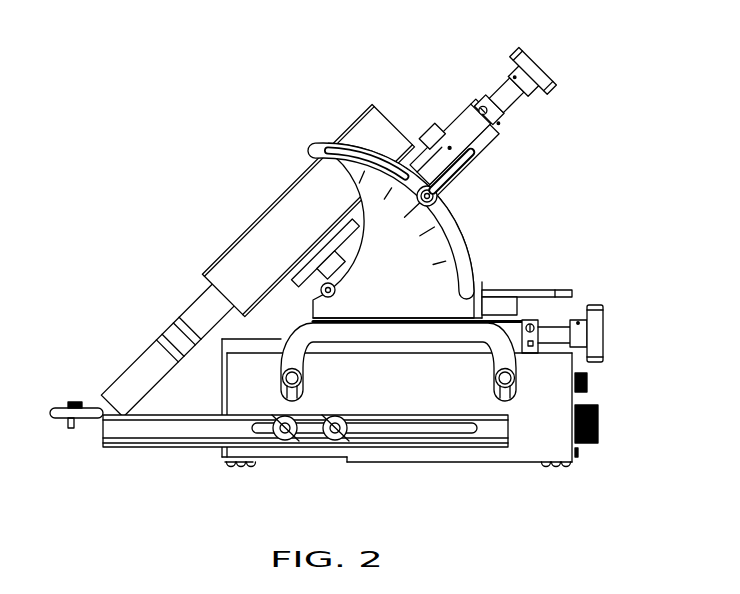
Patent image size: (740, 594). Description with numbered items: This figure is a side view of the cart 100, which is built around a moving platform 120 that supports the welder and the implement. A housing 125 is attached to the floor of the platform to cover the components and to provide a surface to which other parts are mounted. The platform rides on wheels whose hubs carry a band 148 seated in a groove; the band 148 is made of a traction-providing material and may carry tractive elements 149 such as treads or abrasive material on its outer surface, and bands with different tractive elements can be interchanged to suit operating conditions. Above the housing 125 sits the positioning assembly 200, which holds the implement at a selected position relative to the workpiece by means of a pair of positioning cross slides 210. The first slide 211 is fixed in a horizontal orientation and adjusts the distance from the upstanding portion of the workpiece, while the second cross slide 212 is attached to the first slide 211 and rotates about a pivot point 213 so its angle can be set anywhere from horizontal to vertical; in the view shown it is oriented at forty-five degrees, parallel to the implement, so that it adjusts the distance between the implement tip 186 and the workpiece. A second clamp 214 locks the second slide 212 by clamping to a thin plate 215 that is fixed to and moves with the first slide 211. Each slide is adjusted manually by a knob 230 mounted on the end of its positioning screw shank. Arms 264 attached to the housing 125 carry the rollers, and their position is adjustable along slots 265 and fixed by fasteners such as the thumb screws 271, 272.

The cart 100 is at (137, 180).
The moving platform 120 is at (527, 445).
The housing 125 is at (550, 376).
The band 148 is at (232, 468).
The tractive elements 149 is at (250, 468).
The implement tip 186 is at (102, 405).
The positioning assembly 200 is at (580, 147).
The positioning cross slides 210 is at (458, 189).
The first slide 211 is at (495, 288).
The second cross slide 212 is at (431, 133).
The pivot point 213 is at (318, 288).
The second clamp 214 is at (458, 167).
The plate 215 is at (378, 228).
The knob 230 is at (536, 52).
The arms 264 is at (137, 435).
The slots 265 is at (405, 427).
The thumb screw 271 is at (277, 418).
The thumb screw 272 is at (322, 418).